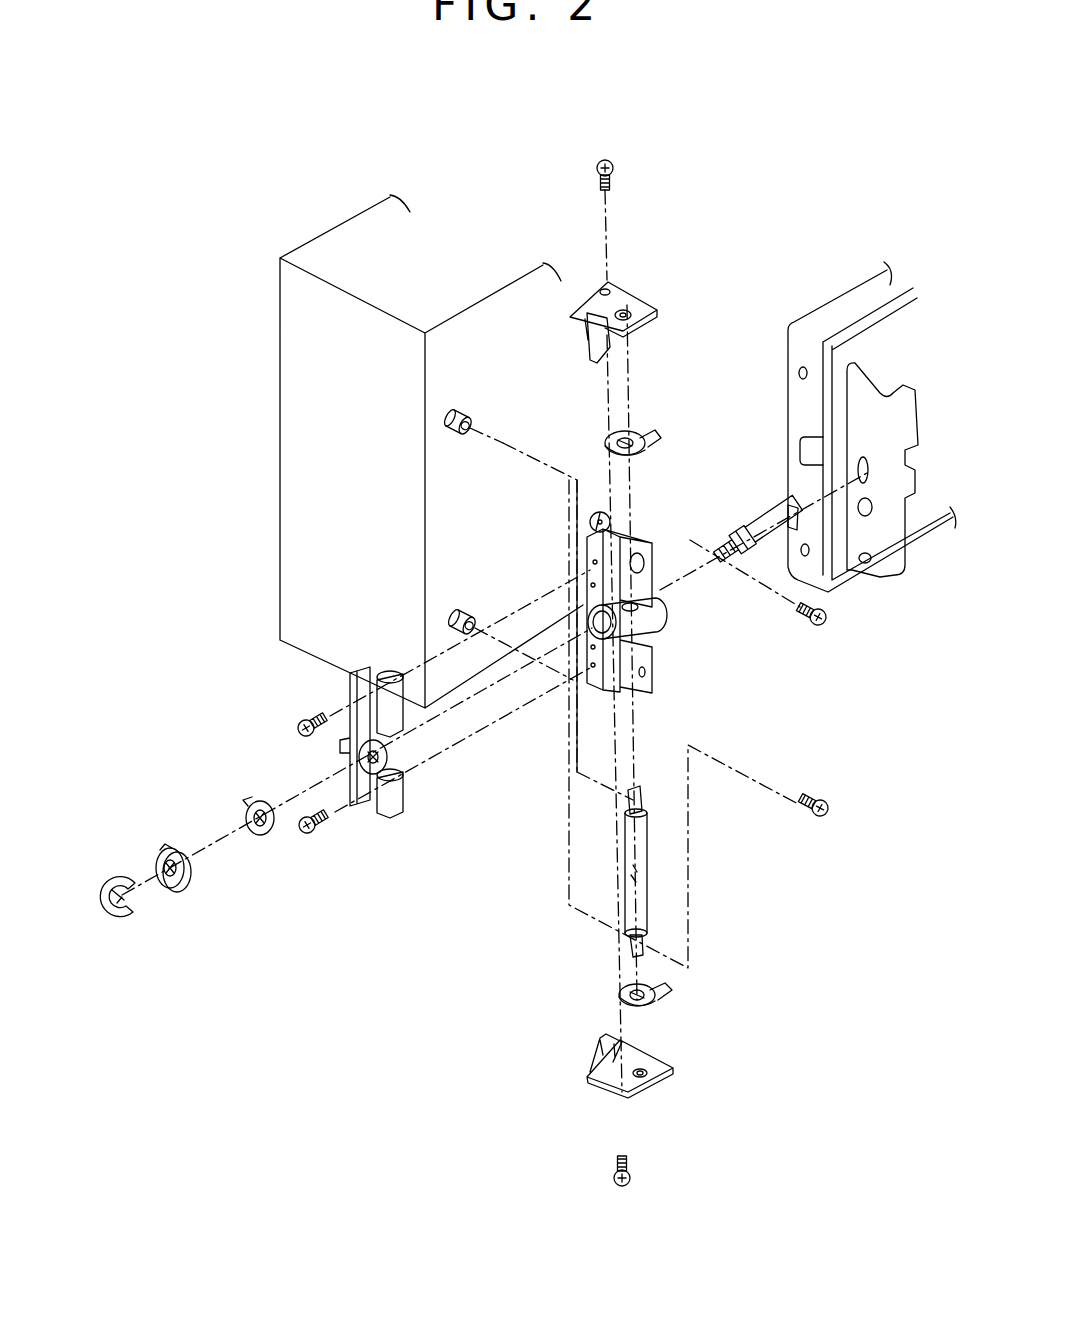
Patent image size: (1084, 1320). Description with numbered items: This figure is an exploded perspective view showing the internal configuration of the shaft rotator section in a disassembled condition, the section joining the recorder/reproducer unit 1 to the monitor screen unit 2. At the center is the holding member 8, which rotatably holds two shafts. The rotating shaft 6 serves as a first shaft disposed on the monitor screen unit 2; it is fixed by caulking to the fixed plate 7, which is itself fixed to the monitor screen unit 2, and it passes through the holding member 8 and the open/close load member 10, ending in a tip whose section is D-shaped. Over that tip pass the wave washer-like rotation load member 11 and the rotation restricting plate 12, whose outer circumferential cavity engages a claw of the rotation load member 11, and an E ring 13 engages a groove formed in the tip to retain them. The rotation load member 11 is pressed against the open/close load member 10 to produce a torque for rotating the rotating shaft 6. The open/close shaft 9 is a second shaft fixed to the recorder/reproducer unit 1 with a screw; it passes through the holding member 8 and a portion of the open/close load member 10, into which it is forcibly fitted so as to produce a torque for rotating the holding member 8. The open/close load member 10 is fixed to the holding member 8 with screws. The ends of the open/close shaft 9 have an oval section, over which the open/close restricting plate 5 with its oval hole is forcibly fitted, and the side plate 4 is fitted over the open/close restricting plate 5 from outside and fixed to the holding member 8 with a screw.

The recorder/reproducer unit 1 is at (296, 323).
The monitor screen unit 2 is at (847, 300).
The side plate 4 is at (648, 293).
The open/close restricting plate 5 is at (640, 425).
The rotating shaft 6 is at (778, 512).
The fixed plate 7 is at (885, 558).
The holding member 8 is at (585, 548).
The open/close shaft 9 is at (640, 836).
The open/close load member 10 is at (395, 797).
The rotation load member 11 is at (275, 835).
The rotation restricting plate 12 is at (185, 893).
The E ring 13 is at (137, 925).